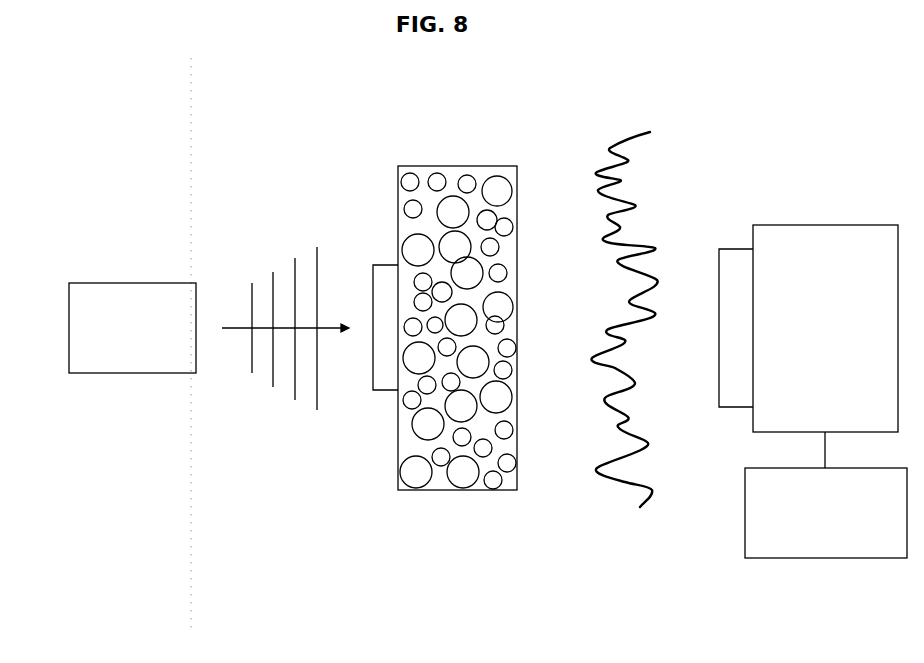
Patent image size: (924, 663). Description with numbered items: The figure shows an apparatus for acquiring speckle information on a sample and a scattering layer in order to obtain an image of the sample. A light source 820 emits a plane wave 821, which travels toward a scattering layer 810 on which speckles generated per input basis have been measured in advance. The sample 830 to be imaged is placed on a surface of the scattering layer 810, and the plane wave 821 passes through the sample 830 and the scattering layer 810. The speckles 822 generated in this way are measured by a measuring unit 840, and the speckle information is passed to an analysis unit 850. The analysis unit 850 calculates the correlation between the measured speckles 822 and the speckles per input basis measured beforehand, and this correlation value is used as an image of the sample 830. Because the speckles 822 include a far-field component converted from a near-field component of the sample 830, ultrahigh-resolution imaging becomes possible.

The scattering layer 810 is at (455, 166).
The light source 820 is at (131, 283).
The plane wave 821 is at (294, 258).
The speckles 822 is at (630, 137).
The sample 830 is at (382, 265).
The measuring unit 840 is at (824, 225).
The analysis unit 850 is at (825, 558).